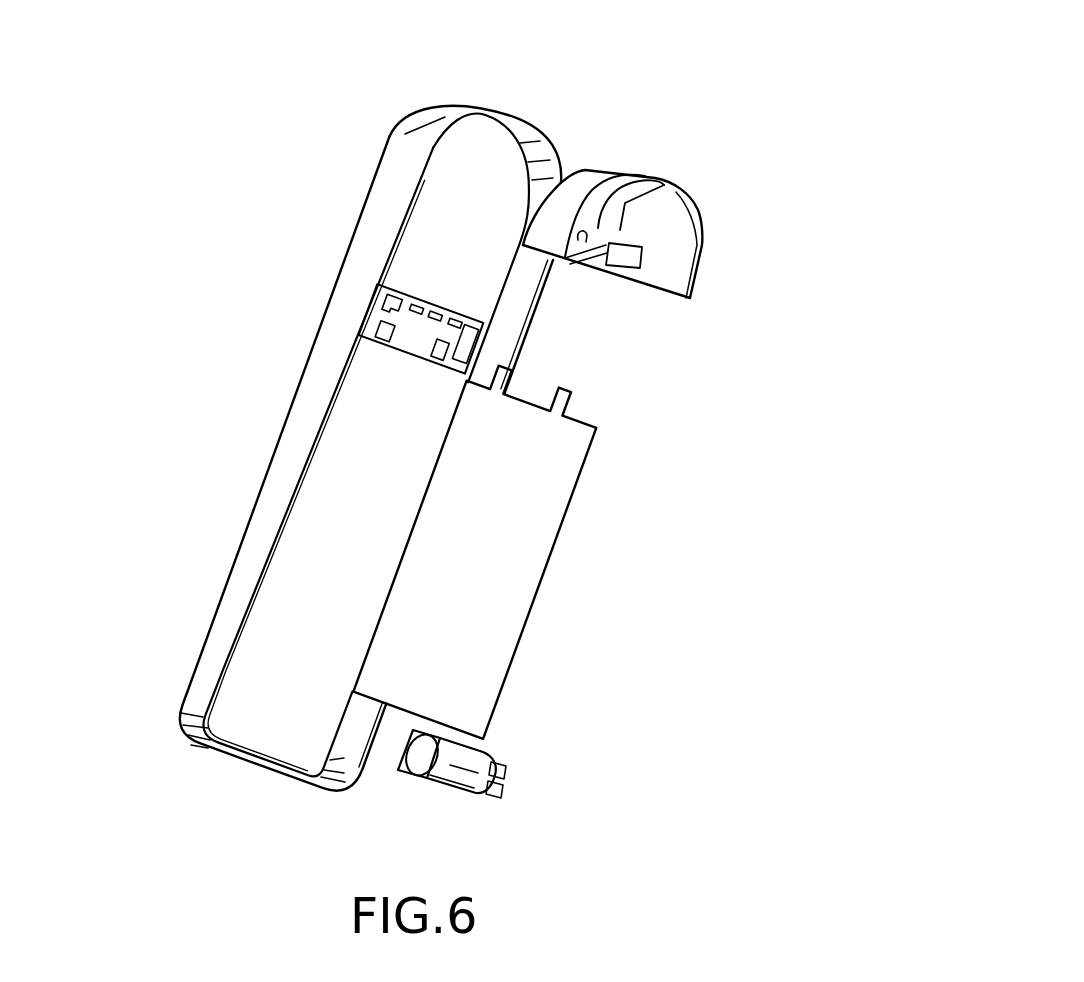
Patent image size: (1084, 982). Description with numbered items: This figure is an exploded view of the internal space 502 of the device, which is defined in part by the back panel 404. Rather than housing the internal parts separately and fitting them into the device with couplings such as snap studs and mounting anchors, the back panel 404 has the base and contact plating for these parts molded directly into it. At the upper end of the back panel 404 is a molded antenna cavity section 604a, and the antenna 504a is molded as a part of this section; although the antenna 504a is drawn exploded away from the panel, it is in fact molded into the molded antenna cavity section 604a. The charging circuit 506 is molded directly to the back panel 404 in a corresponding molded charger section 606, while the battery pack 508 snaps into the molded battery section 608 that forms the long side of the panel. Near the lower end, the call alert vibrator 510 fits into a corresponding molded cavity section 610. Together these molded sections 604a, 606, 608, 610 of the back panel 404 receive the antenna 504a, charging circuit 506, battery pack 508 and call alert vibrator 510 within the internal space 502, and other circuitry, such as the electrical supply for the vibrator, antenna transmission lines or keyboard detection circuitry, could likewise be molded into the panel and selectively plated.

The molded antenna cavity section 604a is at (350, 148).
The back panel 404 is at (515, 117).
The molded charger section 606 is at (332, 290).
The molded battery section 608 is at (252, 505).
The molded cavity section 610 is at (180, 712).
The charging circuit 506 is at (477, 337).
The battery pack 508 is at (497, 633).
The call alert vibrator 510 is at (525, 808).
The internal space 502 is at (777, 560).
The antenna 504a is at (683, 258).